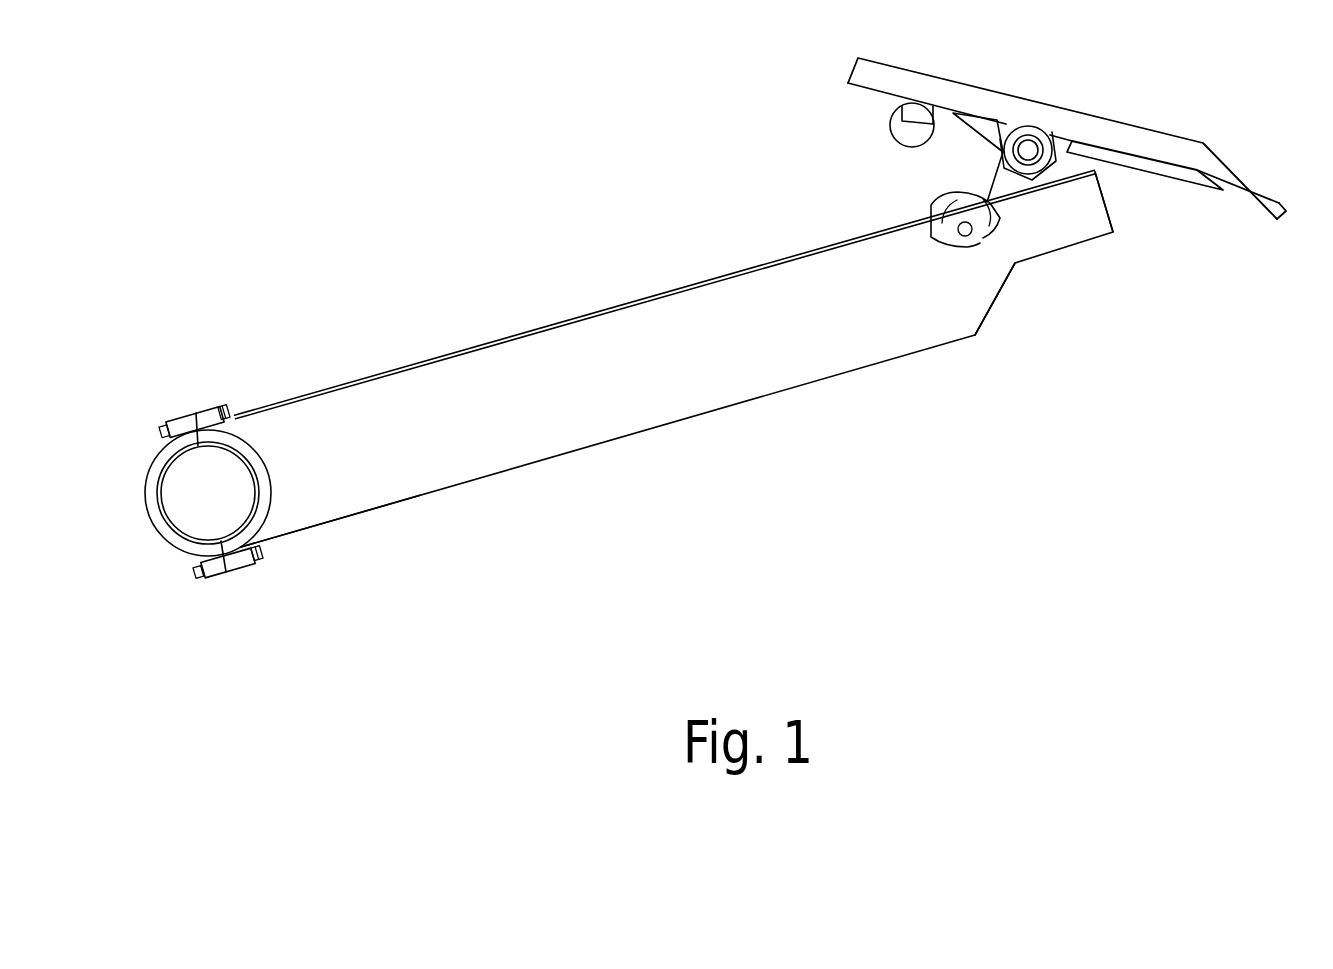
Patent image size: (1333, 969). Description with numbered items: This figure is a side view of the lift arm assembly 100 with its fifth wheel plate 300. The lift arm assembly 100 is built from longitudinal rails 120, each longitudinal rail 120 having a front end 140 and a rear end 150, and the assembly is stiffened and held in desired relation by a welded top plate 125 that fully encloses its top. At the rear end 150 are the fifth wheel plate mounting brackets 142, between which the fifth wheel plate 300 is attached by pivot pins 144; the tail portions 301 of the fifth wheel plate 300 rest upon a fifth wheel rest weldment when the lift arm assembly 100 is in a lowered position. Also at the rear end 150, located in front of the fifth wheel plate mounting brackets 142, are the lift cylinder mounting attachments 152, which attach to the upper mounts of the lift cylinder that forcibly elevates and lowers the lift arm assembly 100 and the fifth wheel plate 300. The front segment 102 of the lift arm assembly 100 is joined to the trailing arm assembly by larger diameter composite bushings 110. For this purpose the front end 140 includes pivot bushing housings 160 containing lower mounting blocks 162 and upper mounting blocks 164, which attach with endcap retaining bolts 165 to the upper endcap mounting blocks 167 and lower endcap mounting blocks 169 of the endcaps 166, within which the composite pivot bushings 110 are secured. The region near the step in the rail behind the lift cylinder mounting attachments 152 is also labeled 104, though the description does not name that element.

The lift arm assembly 100 is at (520, 405).
The front segment 102 is at (283, 480).
The second end of plate 104 is at (977, 305).
The composite bushings 110 is at (158, 485).
The longitudinal rail 120 is at (650, 372).
The welded top plate 125 is at (720, 283).
The front end 140 is at (147, 518).
The fifth wheel plate mounting brackets 142 is at (1003, 183).
The pivot pins 144 is at (1030, 146).
The rear end 150 is at (1115, 240).
The lift cylinder mounting attachments 152 is at (935, 213).
The pivot bushing housings 160 is at (263, 503).
The lower mounting blocks 162 is at (237, 567).
The upper mounting blocks 164 is at (197, 418).
The endcap retaining bolts 165 is at (162, 433).
The endcaps 166 is at (162, 533).
The upper endcap mounting blocks 167 is at (173, 423).
The lower endcap mounting blocks 169 is at (215, 573).
The fifth wheel plate 300 is at (1128, 132).
The tail portions 301 is at (1277, 210).